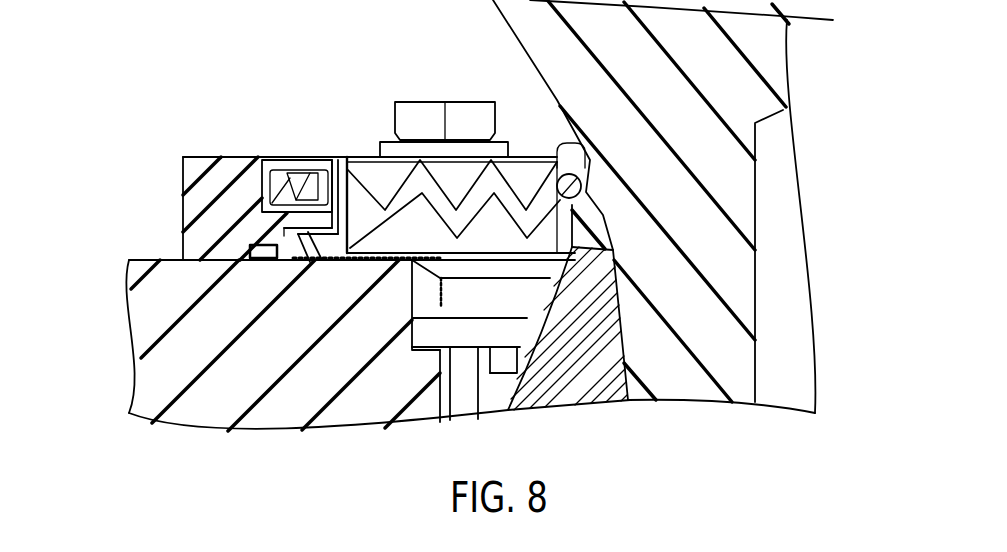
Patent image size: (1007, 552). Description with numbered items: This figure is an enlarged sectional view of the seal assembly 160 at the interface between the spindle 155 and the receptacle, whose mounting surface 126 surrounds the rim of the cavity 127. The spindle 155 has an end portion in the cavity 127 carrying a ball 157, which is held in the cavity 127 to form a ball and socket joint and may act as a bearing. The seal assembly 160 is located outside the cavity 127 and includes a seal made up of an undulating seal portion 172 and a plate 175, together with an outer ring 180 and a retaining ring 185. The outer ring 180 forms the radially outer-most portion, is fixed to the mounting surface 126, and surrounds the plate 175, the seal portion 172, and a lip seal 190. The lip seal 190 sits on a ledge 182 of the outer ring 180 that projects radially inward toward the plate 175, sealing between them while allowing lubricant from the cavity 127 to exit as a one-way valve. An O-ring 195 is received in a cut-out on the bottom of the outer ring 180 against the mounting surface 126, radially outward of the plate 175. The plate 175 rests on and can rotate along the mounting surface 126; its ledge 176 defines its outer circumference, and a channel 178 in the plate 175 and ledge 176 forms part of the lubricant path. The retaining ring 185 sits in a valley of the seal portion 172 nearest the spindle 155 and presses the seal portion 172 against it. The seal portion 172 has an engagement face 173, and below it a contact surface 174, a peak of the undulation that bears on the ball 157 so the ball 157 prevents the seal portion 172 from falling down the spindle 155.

The mounting surface 126 is at (155, 260).
The outer ring 180 is at (182, 233).
The seal assembly 160 is at (160, 154).
The lip seal 190 is at (273, 170).
The O-ring 195 is at (257, 243).
The plate 175 is at (347, 160).
The seal portion 172 is at (417, 163).
The retaining ring 185 is at (556, 157).
The engagement face 173 is at (597, 181).
The spindle 155 is at (752, 213).
The contact surface 174 is at (623, 253).
The ball 157 is at (580, 382).
The channel 178 is at (552, 270).
The cavity 127 is at (465, 388).
The ledge 182 is at (305, 262).
The ledge 176 is at (290, 234).